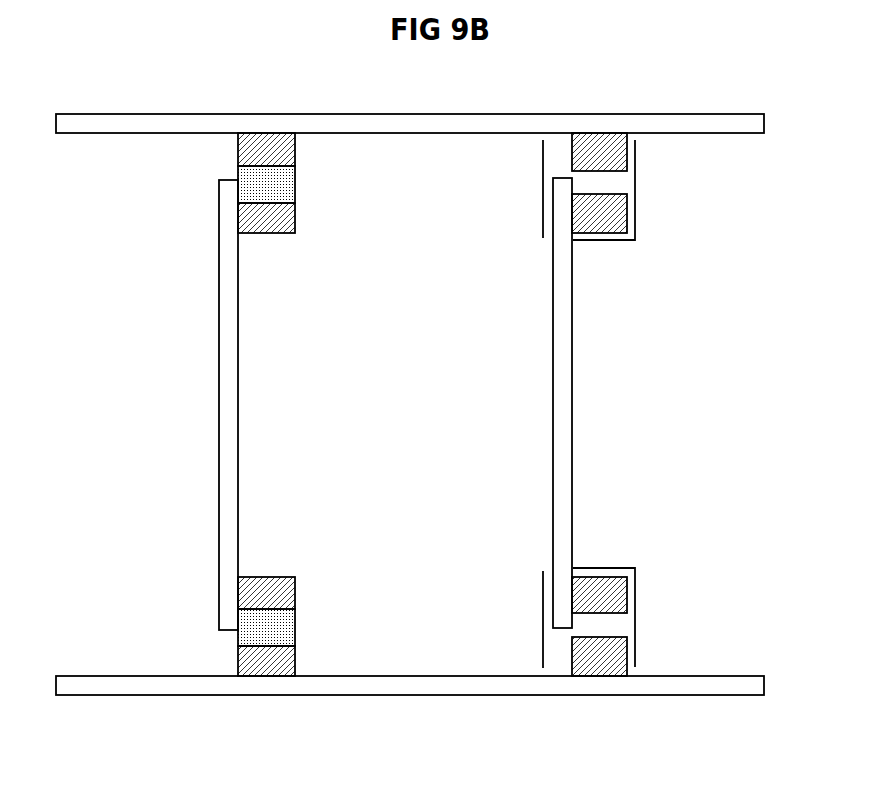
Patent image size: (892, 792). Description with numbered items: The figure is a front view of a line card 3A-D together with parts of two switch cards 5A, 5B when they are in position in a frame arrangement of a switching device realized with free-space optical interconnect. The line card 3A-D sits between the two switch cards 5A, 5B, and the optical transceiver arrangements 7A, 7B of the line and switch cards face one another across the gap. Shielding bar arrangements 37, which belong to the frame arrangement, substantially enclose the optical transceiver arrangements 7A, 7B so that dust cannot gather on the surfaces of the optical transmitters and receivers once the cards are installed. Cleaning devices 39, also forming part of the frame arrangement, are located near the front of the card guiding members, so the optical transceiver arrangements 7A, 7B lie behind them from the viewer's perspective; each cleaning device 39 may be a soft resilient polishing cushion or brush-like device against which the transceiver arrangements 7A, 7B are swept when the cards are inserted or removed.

The switch card 5A is at (740, 133).
The switch card 5B is at (730, 675).
The line card 3A-D is at (571, 390).
The optical transceiver arrangement 7B is at (265, 148).
The optical transceiver arrangement 7A is at (268, 213).
The cleaning device 39 is at (276, 183).
The shielding bar arrangement 37 is at (542, 187).